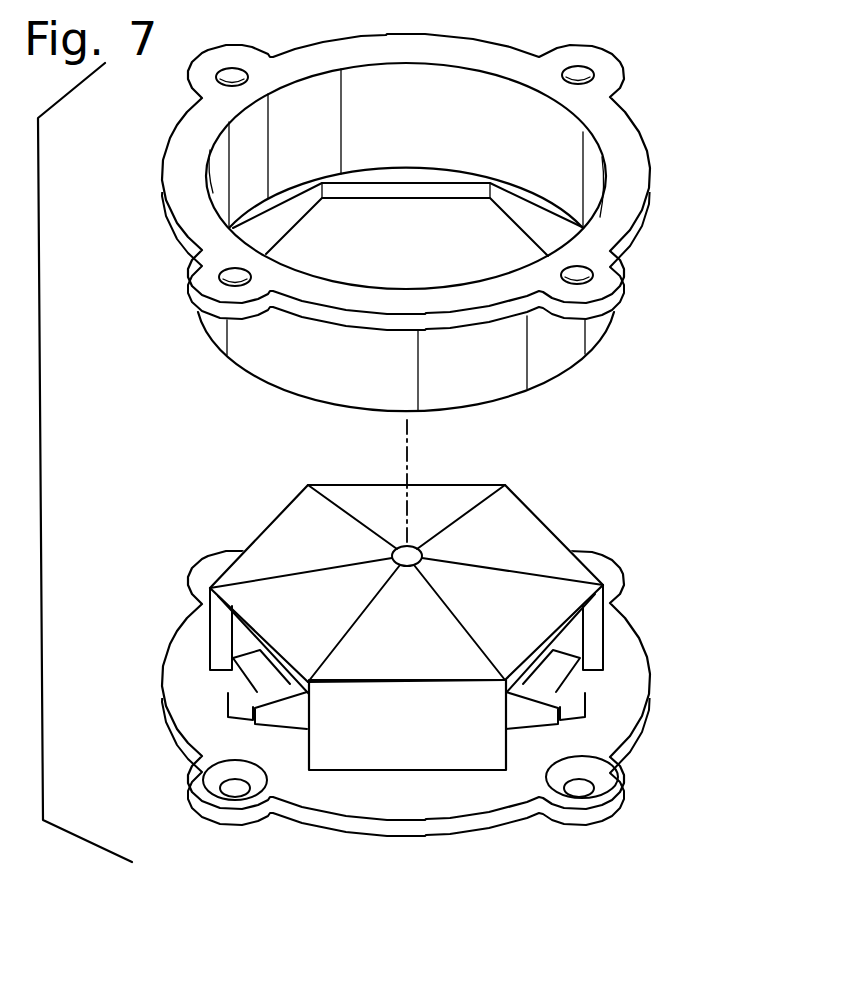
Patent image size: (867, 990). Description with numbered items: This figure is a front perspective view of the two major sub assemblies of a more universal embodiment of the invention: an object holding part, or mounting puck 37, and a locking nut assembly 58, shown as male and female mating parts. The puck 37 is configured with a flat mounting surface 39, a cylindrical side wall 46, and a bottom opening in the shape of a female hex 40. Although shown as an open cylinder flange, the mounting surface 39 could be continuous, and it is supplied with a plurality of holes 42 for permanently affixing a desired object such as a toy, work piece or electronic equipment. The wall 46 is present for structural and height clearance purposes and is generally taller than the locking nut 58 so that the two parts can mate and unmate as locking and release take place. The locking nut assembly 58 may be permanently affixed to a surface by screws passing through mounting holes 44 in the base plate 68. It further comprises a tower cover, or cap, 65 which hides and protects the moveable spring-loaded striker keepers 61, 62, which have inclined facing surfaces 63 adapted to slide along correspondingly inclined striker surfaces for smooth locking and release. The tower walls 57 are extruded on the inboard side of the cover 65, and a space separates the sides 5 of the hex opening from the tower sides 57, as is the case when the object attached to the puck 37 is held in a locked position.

The sides 5 is at (288, 228).
The mounting puck 37 is at (712, 89).
The flat mounting surface 39 is at (475, 55).
The female hex 40 is at (467, 263).
The holes 42 is at (230, 68).
The mounting holes 44 is at (608, 762).
The cylindrical side wall 46 is at (288, 367).
The tower wall 57 is at (392, 747).
The locking nut assembly 58 is at (716, 528).
The striker keeper 61 is at (537, 720).
The striker keeper 62 is at (195, 753).
The inclined facing surface 63 is at (237, 695).
The tower cover 65 is at (520, 538).
The base plate 68 is at (612, 700).